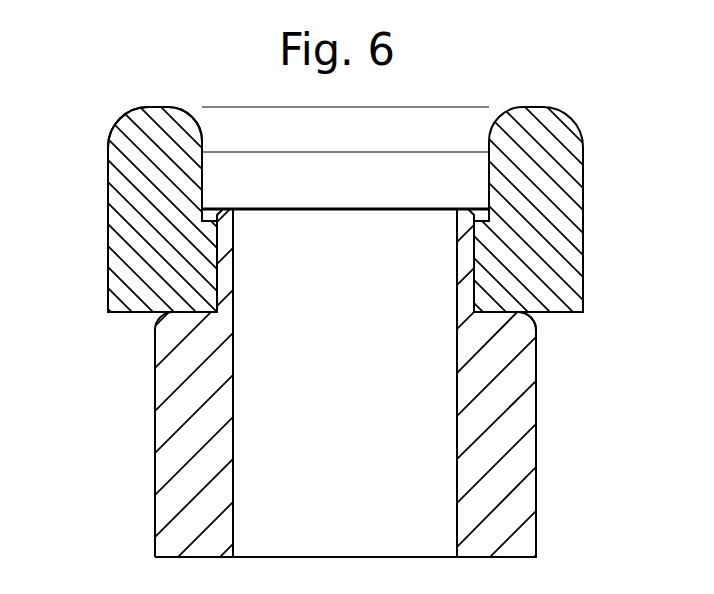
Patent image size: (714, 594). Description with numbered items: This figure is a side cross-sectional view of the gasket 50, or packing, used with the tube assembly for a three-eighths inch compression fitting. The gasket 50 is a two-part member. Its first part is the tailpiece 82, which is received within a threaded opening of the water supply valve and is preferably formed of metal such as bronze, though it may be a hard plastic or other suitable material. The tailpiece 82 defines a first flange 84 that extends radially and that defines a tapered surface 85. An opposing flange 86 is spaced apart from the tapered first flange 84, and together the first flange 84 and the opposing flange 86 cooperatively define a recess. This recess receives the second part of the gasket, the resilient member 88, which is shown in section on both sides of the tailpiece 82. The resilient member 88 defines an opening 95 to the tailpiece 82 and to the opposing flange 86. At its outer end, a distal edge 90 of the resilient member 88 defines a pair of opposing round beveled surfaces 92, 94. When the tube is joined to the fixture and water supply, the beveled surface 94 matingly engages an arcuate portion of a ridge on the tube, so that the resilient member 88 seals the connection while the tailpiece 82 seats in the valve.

The gasket 50 is at (551, 356).
The tailpiece 82 is at (521, 453).
The first flange 84 is at (152, 316).
The tapered surface 85 is at (142, 313).
The opposing flange 86 is at (217, 208).
The resilient member 88 is at (572, 199).
The distal edge 90 is at (150, 107).
The round beveled surface 92 is at (110, 141).
The round beveled surface 94 is at (193, 126).
The opening 95 is at (400, 143).